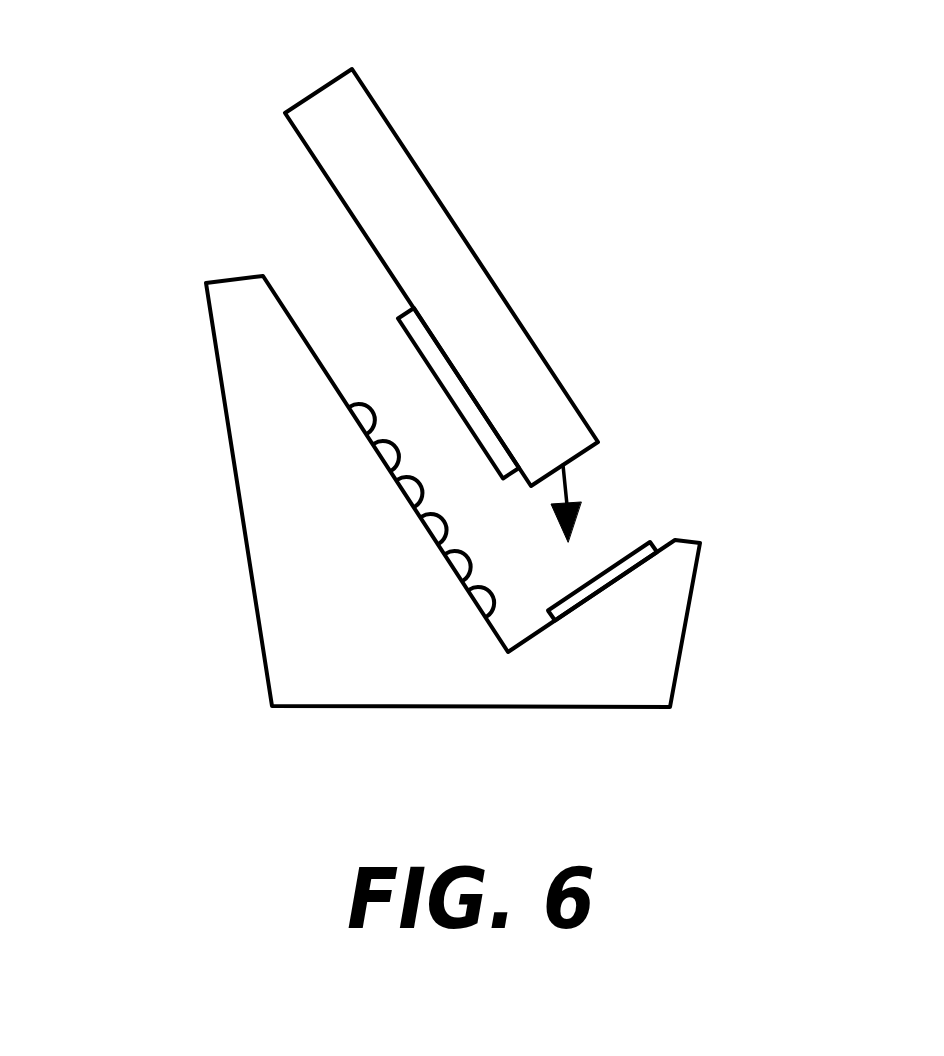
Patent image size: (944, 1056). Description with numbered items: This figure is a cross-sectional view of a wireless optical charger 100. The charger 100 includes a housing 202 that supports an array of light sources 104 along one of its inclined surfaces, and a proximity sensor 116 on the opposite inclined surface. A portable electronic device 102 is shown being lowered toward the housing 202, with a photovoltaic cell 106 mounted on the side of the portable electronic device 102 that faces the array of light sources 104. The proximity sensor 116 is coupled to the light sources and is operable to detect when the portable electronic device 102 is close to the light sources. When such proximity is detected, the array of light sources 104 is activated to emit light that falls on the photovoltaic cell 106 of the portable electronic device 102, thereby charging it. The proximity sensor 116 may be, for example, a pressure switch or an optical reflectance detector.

The charger 100 is at (758, 674).
The portable electronic device 102 is at (337, 80).
The array of light sources 104 is at (458, 571).
The photovoltaic cell 106 is at (398, 316).
The proximity sensor 116 is at (647, 538).
The housing 202 is at (237, 487).